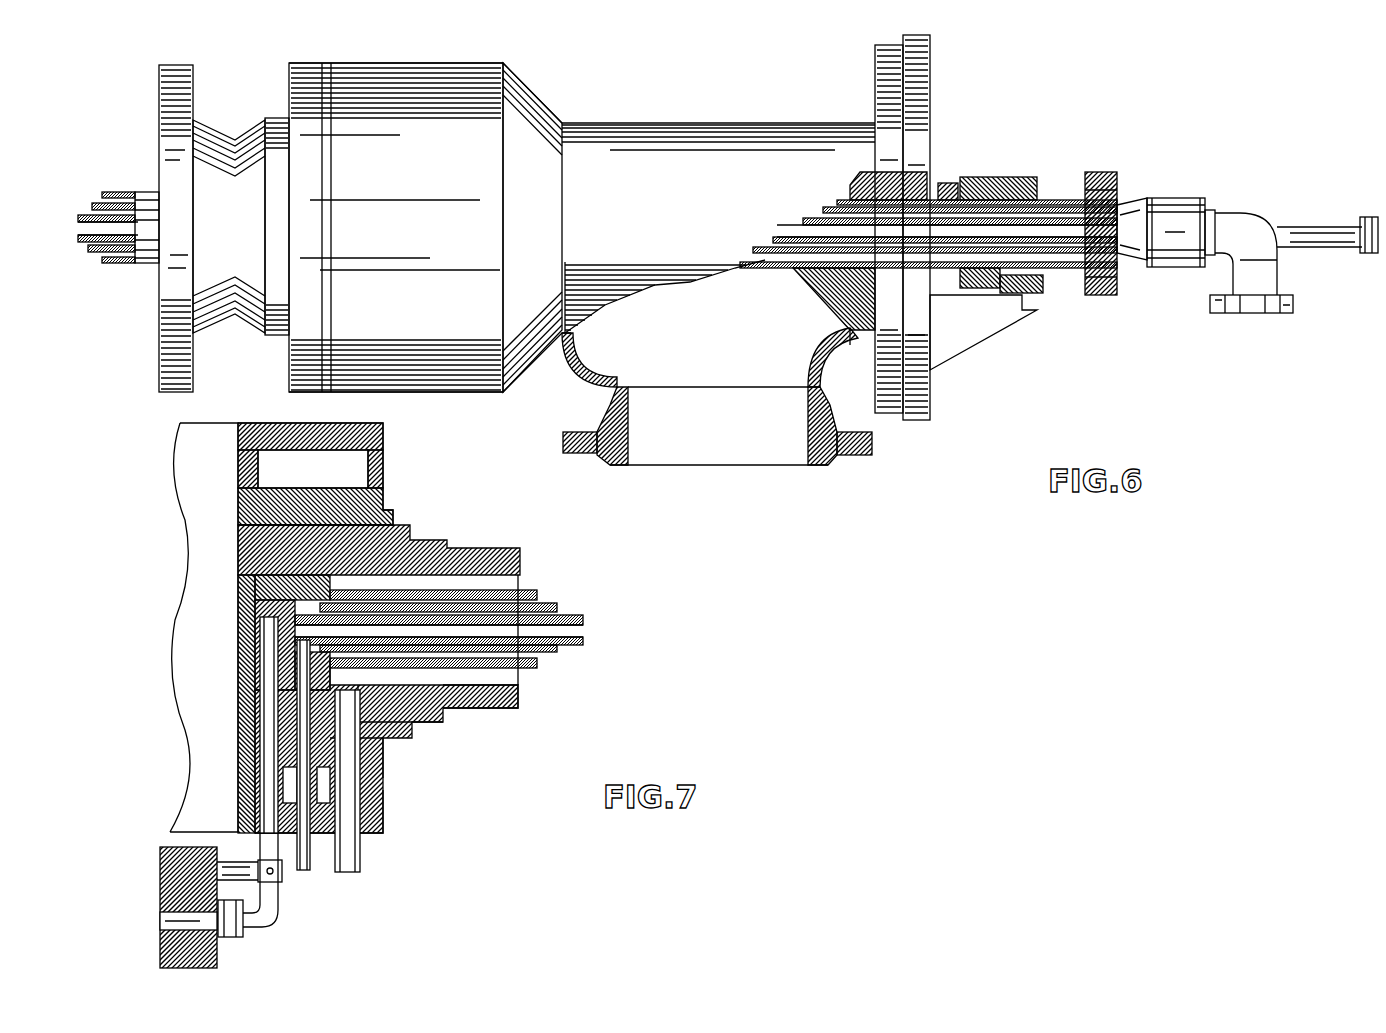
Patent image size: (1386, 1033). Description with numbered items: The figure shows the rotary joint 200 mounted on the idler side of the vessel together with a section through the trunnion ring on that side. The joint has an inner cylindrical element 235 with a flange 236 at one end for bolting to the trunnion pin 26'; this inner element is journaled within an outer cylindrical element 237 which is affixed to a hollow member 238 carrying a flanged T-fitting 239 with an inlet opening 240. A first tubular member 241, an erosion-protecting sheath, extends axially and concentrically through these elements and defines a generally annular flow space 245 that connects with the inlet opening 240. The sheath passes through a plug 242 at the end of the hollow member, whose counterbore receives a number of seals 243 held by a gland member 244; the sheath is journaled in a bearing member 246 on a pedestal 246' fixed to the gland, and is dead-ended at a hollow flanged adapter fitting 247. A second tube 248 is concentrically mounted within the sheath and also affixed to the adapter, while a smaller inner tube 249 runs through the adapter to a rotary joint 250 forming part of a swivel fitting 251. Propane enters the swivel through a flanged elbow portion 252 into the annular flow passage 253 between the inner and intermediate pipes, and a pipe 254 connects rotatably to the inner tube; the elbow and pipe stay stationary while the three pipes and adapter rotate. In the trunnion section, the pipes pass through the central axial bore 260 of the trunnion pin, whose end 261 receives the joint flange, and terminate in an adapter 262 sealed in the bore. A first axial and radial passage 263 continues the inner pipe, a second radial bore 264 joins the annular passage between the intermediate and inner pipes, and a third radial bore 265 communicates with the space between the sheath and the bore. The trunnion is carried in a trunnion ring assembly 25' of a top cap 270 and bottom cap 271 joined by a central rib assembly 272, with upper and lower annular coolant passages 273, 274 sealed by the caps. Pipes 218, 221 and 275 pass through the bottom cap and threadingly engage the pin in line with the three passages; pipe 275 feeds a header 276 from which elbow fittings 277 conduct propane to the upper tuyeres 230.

In FIG. 6, the rotary joint 200 is at (590, 105).
In FIG. 6, the inner cylindrical element 235 is at (213, 126).
In FIG. 6, the flange 236 is at (175, 65).
In FIG. 6, the outer cylindrical element 237 is at (420, 62).
In FIG. 6, the hollow member 238 is at (712, 125).
In FIG. 6, the flanged T-fitting 239 is at (612, 465).
In FIG. 6, the inlet opening 240 is at (718, 445).
In FIG. 6, the first tubular member 241 is at (120, 263).
In FIG. 7, the first tubular member 241 is at (537, 664).
In FIG. 6, the plug 242 is at (862, 335).
In FIG. 6, the seals 243 is at (825, 305).
In FIG. 6, the gland member 244 is at (930, 58).
In FIG. 6, the annular flow space 245 is at (724, 343).
In FIG. 6, the bearing member 246 is at (983, 352).
In FIG. 6, the pedestal 246' is at (1052, 324).
In FIG. 6, the flanged adapter fitting 247 is at (1100, 172).
In FIG. 6, the second tube 248 is at (935, 172).
In FIG. 7, the second tube 248 is at (537, 595).
In FIG. 6, the inner tube 249 is at (975, 200).
In FIG. 7, the inner tube 249 is at (583, 631).
In FIG. 6, the rotary joint 250 is at (1180, 188).
In FIG. 6, the swivel fitting 251 is at (1245, 198).
In FIG. 6, the flanged elbow portion 252 is at (1283, 320).
In FIG. 6, the annular flow passage 253 is at (1125, 210).
In FIG. 6, the pipe 254 is at (1372, 217).
In FIG. 7, the trunnion ring assembly 25' is at (379, 474).
In FIG. 7, the trunnion pin 26' is at (383, 663).
In FIG. 7, the central axial bore 260 is at (520, 678).
In FIG. 7, the end of the trunnion pin 261 is at (507, 702).
In FIG. 7, the adapter 262 is at (237, 607).
In FIG. 7, the first axial and radial passage 263 is at (262, 665).
In FIG. 7, the second radial bore 264 is at (292, 708).
In FIG. 7, the third radial bore 265 is at (365, 700).
In FIG. 7, the top cap 270 is at (353, 422).
In FIG. 7, the bottom cap 271 is at (383, 826).
In FIG. 7, the central rib assembly 272 is at (393, 490).
In FIG. 7, the upper annular coolant fluid passage 273 is at (278, 470).
In FIG. 7, the lower annular coolant fluid passage 274 is at (385, 775).
In FIG. 7, the pipe 275 is at (218, 862).
In FIG. 7, the header 276 is at (284, 878).
In FIG. 7, the elbow fittings 277 is at (265, 928).
In FIG. 7, the pipe 218 is at (360, 855).
In FIG. 7, the pipe 221 is at (310, 868).
In FIG. 7, the upper tuyeres 230 is at (160, 890).